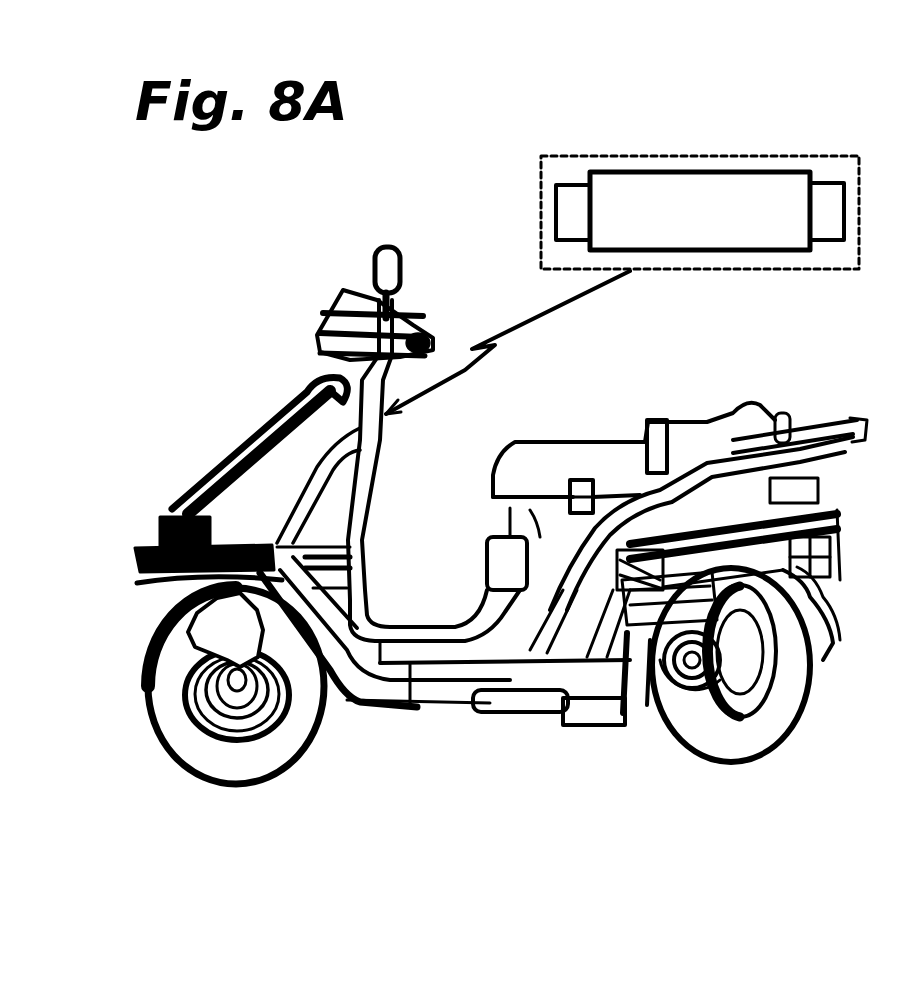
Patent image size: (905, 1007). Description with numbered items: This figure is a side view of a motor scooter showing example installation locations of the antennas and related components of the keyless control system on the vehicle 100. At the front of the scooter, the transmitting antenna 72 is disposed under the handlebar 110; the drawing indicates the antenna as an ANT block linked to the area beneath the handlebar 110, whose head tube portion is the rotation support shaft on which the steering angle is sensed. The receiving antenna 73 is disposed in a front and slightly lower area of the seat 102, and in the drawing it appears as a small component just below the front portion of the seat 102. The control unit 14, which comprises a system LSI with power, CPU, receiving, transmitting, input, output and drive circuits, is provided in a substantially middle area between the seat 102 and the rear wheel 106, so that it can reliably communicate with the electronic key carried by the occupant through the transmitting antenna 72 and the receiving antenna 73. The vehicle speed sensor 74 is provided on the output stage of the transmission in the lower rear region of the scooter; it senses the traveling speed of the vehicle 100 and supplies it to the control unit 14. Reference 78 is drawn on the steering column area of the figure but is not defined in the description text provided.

The transmitting antenna 72 is at (743, 250).
The receiving antenna 73 is at (575, 487).
The vehicle speed sensor 74 is at (607, 726).
The steering column 78 is at (340, 364).
The vehicle 100 is at (283, 420).
The seat 102 is at (628, 440).
The rear wheel 106 is at (690, 728).
The handlebar 110 is at (422, 345).
The control unit 14 is at (588, 533).